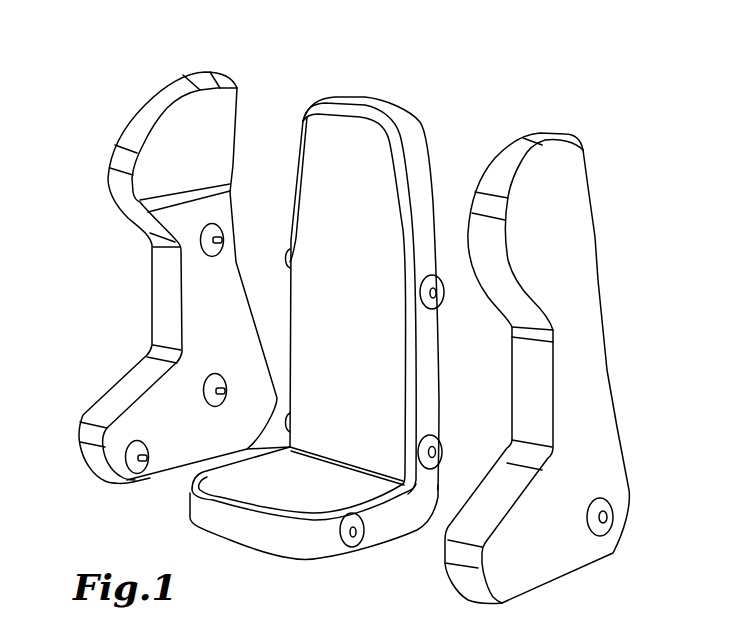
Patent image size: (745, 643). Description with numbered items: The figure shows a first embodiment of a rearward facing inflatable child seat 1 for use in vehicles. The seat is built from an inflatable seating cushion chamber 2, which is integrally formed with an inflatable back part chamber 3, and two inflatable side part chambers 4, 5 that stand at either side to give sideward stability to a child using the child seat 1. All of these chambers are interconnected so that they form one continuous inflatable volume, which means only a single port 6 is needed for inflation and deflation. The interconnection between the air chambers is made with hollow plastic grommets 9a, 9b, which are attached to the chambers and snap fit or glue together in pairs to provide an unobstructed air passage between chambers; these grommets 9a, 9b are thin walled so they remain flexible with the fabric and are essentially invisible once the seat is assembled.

The child seat 1 is at (558, 50).
The inflatable seating cushion chamber 2 is at (252, 488).
The inflatable back part chamber 3 is at (328, 185).
The inflatable side part chamber 4 is at (173, 292).
The inflatable side part chamber 5 is at (563, 272).
The port 6 is at (607, 522).
The hollow plastic grommet 9a is at (137, 462).
The hollow plastic grommet 9b is at (352, 545).